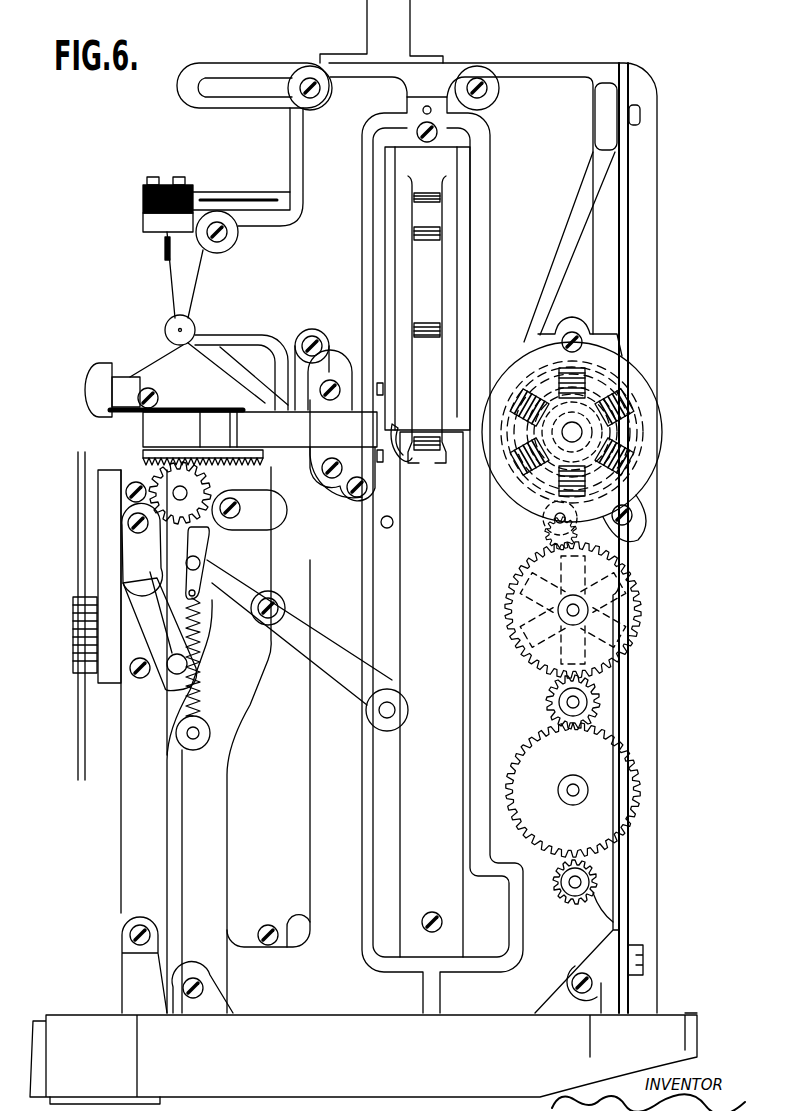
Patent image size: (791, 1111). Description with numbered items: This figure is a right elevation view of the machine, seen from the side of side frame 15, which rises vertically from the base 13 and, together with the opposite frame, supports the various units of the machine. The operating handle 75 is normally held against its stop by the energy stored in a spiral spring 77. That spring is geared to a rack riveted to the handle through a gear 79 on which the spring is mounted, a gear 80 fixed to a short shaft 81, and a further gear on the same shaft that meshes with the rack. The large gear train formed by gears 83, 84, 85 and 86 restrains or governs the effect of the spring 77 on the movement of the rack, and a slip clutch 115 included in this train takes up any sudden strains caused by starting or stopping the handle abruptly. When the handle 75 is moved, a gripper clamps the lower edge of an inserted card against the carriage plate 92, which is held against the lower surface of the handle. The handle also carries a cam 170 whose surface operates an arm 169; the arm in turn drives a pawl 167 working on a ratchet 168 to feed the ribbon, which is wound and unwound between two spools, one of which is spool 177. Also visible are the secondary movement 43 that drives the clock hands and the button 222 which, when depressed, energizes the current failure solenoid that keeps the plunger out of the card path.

The base 13 is at (70, 1027).
The side frame 15 is at (138, 865).
The secondary movement 43 is at (96, 548).
The operating handle 75 is at (425, 268).
The spiral spring 77 is at (633, 433).
The gear 79 is at (598, 408).
The gear 80 is at (545, 528).
The short shaft 81 is at (550, 538).
The gear 83 is at (627, 593).
The gear 84 is at (600, 702).
The gear 85 is at (627, 788).
The gear 86 is at (600, 878).
The carriage plate 92 is at (393, 303).
The slip clutch 115 is at (647, 628).
The pawl 167 is at (204, 545).
The ratchet 168 is at (128, 497).
The arm 169 is at (307, 632).
The cam 170 is at (403, 476).
The spool 177 is at (147, 412).
The button 222 is at (95, 385).